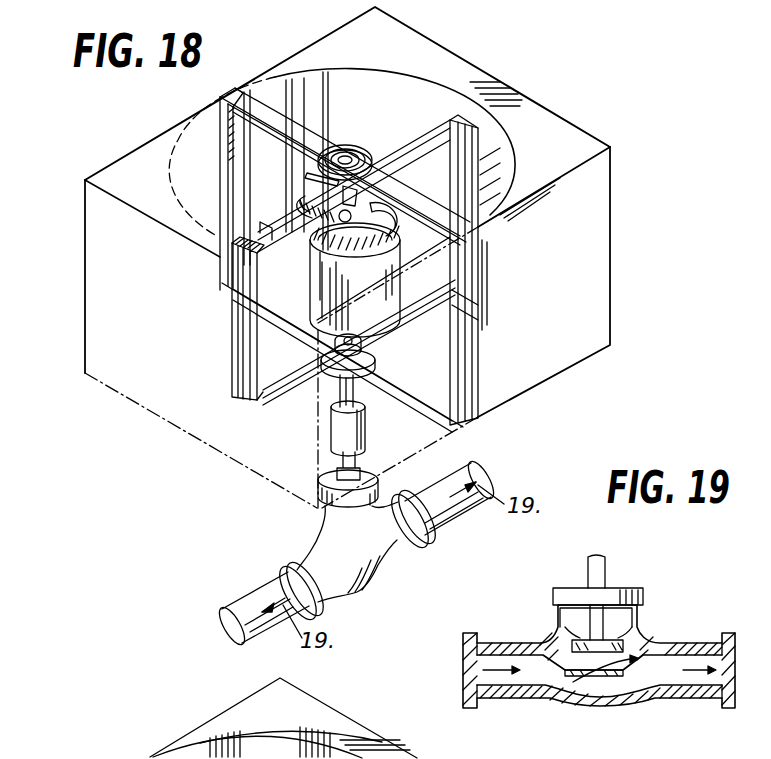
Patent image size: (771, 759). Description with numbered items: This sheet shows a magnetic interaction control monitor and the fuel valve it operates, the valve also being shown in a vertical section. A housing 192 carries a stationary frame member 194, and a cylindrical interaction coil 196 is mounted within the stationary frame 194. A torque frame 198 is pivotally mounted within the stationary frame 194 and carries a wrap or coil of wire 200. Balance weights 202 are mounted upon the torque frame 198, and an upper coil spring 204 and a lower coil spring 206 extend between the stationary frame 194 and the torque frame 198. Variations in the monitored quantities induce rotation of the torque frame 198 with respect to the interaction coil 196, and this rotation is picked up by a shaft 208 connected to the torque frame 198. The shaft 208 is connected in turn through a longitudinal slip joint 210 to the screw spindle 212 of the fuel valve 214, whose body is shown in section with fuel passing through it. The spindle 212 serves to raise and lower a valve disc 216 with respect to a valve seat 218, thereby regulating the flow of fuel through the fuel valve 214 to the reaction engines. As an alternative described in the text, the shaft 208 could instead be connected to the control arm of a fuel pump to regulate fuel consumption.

In FIG. 18, the housing 192 is at (577, 128).
In FIG. 18, the stationary frame member 194 is at (467, 415).
In FIG. 18, the cylindrical interaction coil 196 is at (387, 313).
In FIG. 18, the torque frame 198 is at (259, 388).
In FIG. 18, the coil of wire 200 is at (233, 257).
In FIG. 18, the balance weights 202 is at (308, 162).
In FIG. 18, the upper coil spring 204 is at (338, 150).
In FIG. 18, the lower coil spring 206 is at (368, 382).
In FIG. 18, the shaft 208 is at (341, 392).
In FIG. 18, the longitudinal slip joint 210 is at (330, 440).
In FIG. 18, the screw spindle 212 is at (357, 466).
In FIG. 19, the screw spindle 212 is at (600, 574).
In FIG. 18, the valve body 214 is at (405, 568).
In FIG. 19, the valve body 214 is at (552, 703).
In FIG. 19, the valve disc 216 is at (567, 647).
In FIG. 19, the valve seat 218 is at (632, 676).